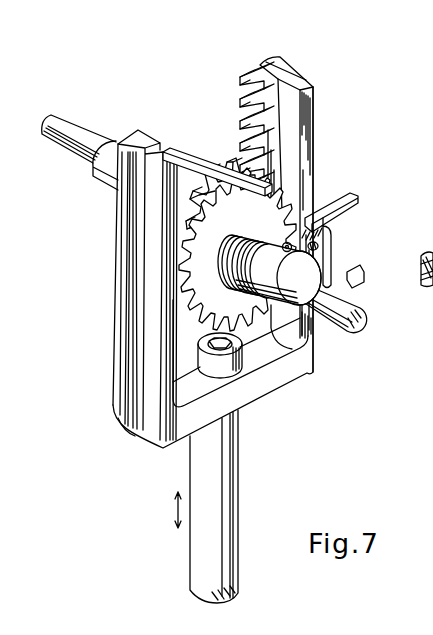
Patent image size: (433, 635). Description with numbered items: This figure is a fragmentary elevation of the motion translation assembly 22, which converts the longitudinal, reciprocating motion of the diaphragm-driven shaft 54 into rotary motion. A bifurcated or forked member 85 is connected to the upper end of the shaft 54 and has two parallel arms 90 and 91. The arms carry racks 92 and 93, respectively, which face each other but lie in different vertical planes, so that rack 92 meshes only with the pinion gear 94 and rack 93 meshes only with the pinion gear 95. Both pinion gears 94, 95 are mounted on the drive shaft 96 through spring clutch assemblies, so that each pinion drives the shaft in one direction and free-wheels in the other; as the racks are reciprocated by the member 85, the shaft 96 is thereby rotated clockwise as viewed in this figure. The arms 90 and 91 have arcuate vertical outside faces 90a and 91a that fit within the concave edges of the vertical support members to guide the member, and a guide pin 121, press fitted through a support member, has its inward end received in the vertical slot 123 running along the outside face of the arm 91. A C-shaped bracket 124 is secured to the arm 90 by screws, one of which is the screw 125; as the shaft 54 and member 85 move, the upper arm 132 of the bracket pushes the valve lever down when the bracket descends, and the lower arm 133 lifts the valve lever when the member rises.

The motion translation assembly 22 is at (158, 102).
The shaft 54 is at (236, 509).
The bifurcated member 85 is at (254, 396).
The arm 90 is at (313, 148).
The arcuate vertical outside face 90a is at (341, 76).
The arm 91 is at (116, 258).
The arcuate vertical outside face 91a is at (117, 232).
The rack 92 is at (257, 72).
The rack 93 is at (168, 152).
The pinion gear 94 is at (201, 152).
The pinion gear 95 is at (300, 213).
The drive shaft 96 is at (77, 131).
The guide pin 121 is at (427, 258).
The vertical slot 123 is at (128, 425).
The C-shaped bracket 124 is at (326, 248).
The screw 125 is at (324, 243).
The upper arm 132 is at (357, 197).
The lower arm 133 is at (345, 282).